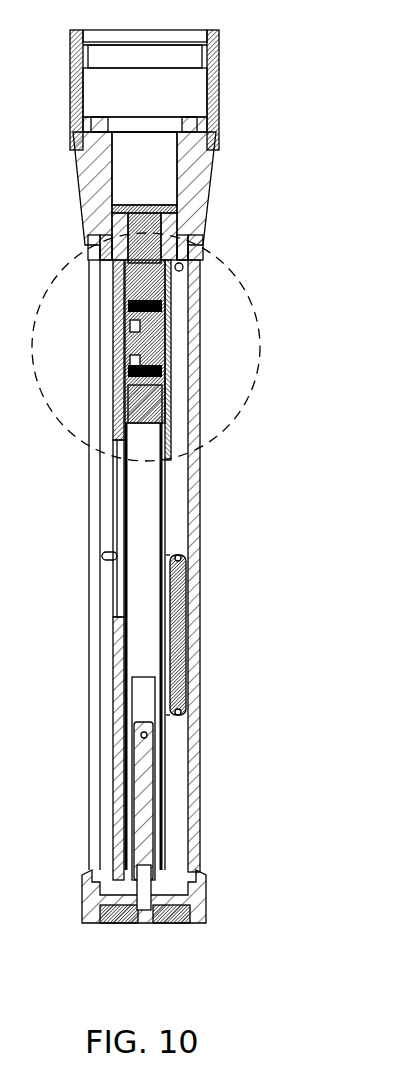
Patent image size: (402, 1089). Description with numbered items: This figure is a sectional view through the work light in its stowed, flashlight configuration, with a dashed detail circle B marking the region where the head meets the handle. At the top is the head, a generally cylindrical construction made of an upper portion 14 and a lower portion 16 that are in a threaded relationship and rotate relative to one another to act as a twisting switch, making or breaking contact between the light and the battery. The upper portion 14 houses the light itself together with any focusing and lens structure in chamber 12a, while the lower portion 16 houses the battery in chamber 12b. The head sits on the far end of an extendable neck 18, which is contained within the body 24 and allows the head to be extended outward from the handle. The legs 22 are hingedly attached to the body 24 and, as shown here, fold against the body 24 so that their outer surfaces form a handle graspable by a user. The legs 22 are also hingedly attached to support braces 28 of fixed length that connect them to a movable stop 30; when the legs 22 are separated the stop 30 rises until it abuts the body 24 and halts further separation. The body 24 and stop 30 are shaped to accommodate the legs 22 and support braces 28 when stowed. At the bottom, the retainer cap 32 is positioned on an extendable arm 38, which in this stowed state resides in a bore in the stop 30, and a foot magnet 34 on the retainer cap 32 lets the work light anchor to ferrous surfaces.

The upper portion 14 is at (208, 73).
The chamber 12a is at (145, 92).
The chamber 12b is at (144, 168).
The lower portion 16 is at (205, 190).
The extendable neck 18 is at (145, 646).
The legs 22 is at (197, 490).
The body 24 is at (117, 467).
The support braces 28 is at (180, 650).
The movable stop 30 is at (117, 660).
The retainer cap 32 is at (205, 897).
The foot magnet 34 is at (178, 923).
The extendable arm 38 is at (146, 797).
The detail region B is at (262, 345).